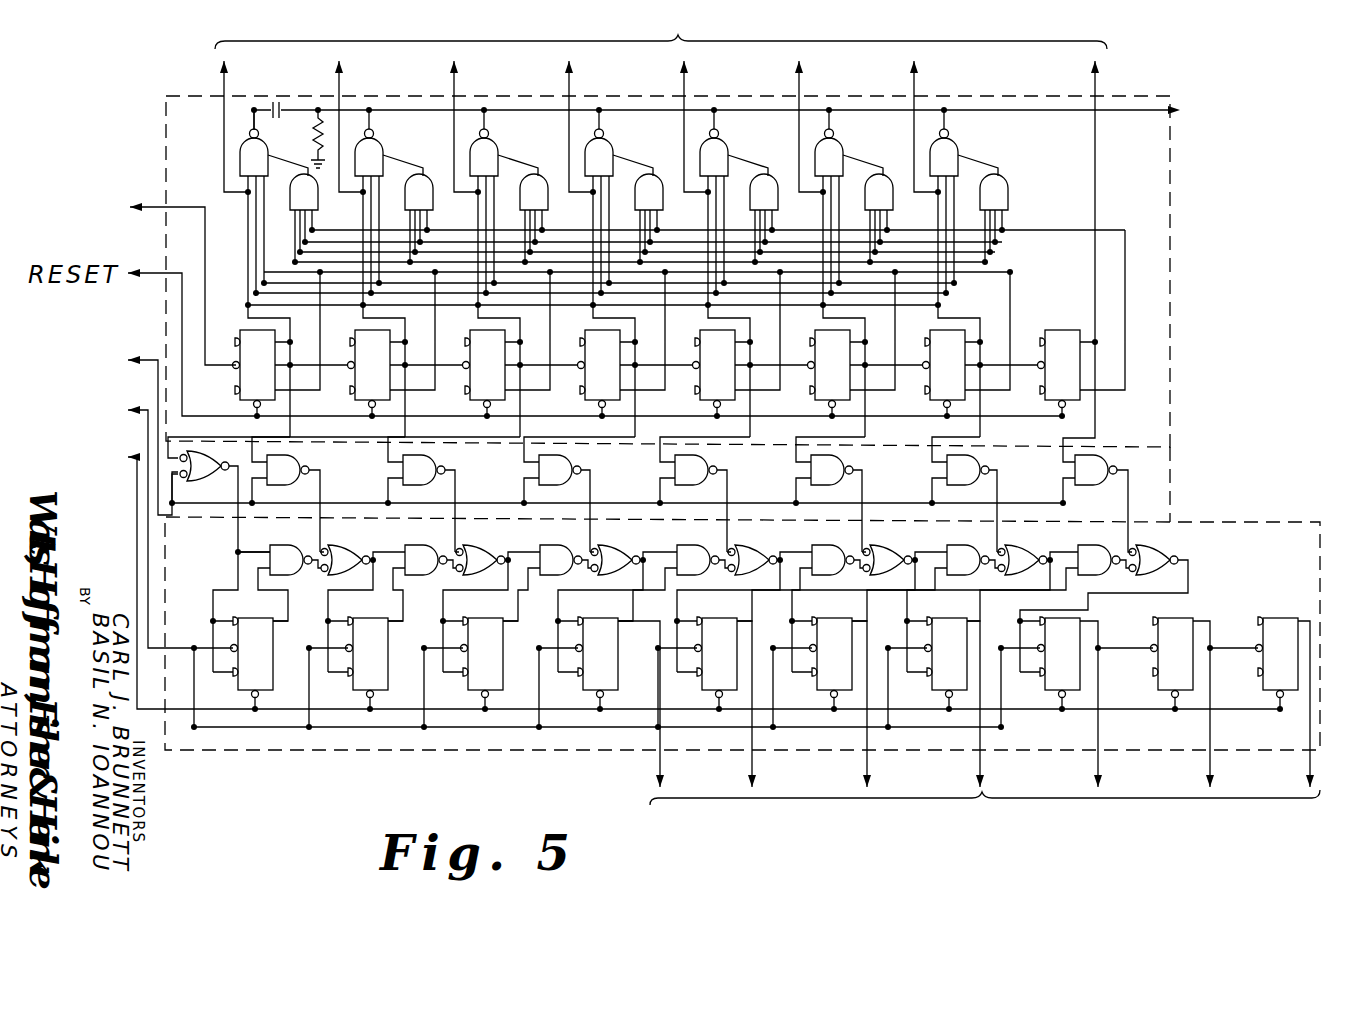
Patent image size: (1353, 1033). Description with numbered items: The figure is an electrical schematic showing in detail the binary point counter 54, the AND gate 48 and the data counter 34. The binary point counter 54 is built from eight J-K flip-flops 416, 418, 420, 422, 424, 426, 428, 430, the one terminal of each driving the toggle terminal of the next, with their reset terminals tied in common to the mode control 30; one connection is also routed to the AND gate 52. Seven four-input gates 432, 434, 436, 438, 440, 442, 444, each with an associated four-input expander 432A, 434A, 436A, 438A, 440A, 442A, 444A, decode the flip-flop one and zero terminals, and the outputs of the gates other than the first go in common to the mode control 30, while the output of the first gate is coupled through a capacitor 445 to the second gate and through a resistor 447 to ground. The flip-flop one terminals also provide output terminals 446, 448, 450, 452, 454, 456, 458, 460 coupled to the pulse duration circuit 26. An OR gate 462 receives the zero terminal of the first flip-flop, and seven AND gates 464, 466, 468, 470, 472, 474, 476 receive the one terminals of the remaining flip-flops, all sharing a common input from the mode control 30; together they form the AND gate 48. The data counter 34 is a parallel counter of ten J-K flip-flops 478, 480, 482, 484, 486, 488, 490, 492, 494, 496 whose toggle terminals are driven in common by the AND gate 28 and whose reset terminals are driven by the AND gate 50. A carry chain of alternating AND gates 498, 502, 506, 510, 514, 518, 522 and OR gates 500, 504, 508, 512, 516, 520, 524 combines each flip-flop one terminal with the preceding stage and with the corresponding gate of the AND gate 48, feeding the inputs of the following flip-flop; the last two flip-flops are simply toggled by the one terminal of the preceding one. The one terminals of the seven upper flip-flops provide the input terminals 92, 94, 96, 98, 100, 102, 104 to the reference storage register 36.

The pulse duration circuit 26 is at (676, 30).
The AND gate 28 is at (119, 516).
The mode control 30 is at (665, 301).
The data counter 34 is at (268, 752).
The reference storage register 36 is at (985, 819).
The AND gate 48 is at (1173, 465).
The AND gate 50 is at (642, 571).
The AND gate 52 is at (120, 271).
The binary point counter 54 is at (1180, 186).
The input terminal 92 is at (664, 768).
The input terminal 94 is at (756, 768).
The input terminal 96 is at (871, 768).
The input terminal 98 is at (984, 768).
The input terminal 100 is at (1102, 766).
The input terminal 102 is at (1214, 766).
The input terminal 104 is at (1312, 768).
The J-K flip-flop 416 is at (262, 318).
The J-K flip-flop 418 is at (357, 332).
The J-K flip-flop 420 is at (465, 396).
The J-K flip-flop 422 is at (580, 396).
The J-K flip-flop 424 is at (695, 396).
The J-K flip-flop 426 is at (810, 396).
The J-K flip-flop 428 is at (925, 396).
The J-K flip-flop 430 is at (1040, 396).
The four-input gate 432 is at (240, 152).
The four-input expander 432A is at (318, 195).
The four-input gate 434 is at (375, 140).
The four-input expander 434A is at (433, 195).
The four-input gate 436 is at (490, 140).
The four-input expander 436A is at (542, 176).
The four-input gate 438 is at (605, 140).
The four-input expander 438A is at (657, 176).
The four-input gate 440 is at (720, 140).
The four-input expander 440A is at (772, 176).
The four-input gate 442 is at (835, 140).
The four-input expander 442A is at (887, 176).
The four-input gate 444 is at (950, 140).
The four-input expander 444A is at (1004, 176).
The capacitor 445 is at (272, 103).
The output terminal 446 is at (225, 100).
The resistor 447 is at (313, 140).
The output terminal 448 is at (340, 100).
The output terminal 450 is at (455, 100).
The output terminal 452 is at (570, 100).
The output terminal 454 is at (685, 100).
The output terminal 456 is at (800, 100).
The output terminal 458 is at (915, 100).
The output terminal 460 is at (1096, 100).
The OR gate 462 is at (224, 480).
The AND gate 464 is at (303, 462).
The AND gate 466 is at (439, 462).
The AND gate 468 is at (575, 462).
The AND gate 470 is at (723, 456).
The AND gate 472 is at (859, 456).
The AND gate 474 is at (983, 462).
The AND gate 476 is at (1072, 478).
The J-K flip-flop 478 is at (276, 648).
The J-K flip-flop 480 is at (391, 648).
The J-K flip-flop 482 is at (512, 636).
The J-K flip-flop 484 is at (621, 648).
The J-K flip-flop 486 is at (738, 614).
The J-K flip-flop 488 is at (857, 690).
The J-K flip-flop 490 is at (972, 690).
The J-K flip-flop 492 is at (1085, 690).
The J-K flip-flop 494 is at (1198, 614).
The J-K flip-flop 496 is at (1303, 614).
The AND gate 498 is at (303, 546).
The OR gate 500 is at (336, 545).
The AND gate 502 is at (401, 545).
The OR gate 504 is at (466, 545).
The AND gate 506 is at (576, 527).
The OR gate 508 is at (606, 527).
The AND gate 510 is at (713, 527).
The OR gate 512 is at (743, 527).
The AND gate 514 is at (848, 527).
The OR gate 516 is at (878, 527).
The AND gate 518 is at (983, 527).
The OR gate 520 is at (1013, 527).
The AND gate 522 is at (1114, 527).
The OR gate 524 is at (1180, 533).